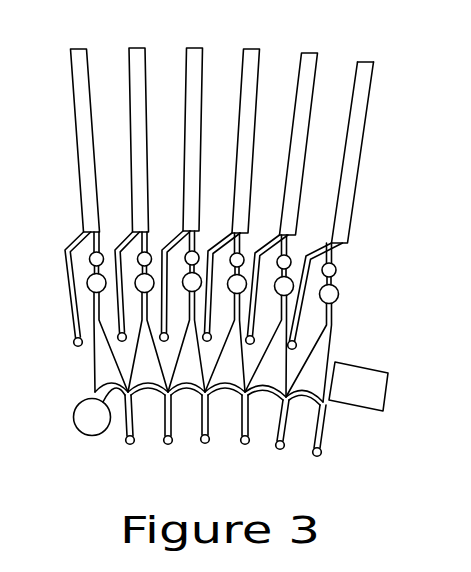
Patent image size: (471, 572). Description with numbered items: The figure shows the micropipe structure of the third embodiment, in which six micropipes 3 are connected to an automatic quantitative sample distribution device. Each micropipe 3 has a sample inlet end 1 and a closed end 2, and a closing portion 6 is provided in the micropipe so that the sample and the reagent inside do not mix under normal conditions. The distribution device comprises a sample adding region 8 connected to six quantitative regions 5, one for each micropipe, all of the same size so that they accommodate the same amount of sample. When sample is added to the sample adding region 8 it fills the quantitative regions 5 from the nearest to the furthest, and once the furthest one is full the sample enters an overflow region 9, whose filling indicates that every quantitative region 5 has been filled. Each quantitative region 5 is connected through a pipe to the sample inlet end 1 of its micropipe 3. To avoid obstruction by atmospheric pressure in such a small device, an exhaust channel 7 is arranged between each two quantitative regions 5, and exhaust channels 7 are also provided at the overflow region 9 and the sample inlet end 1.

The sample inlet end 1 is at (338, 248).
The closed end 2 is at (370, 60).
The micropipe 3 is at (363, 149).
The quantitative region 5 is at (317, 368).
The closing portion 6 is at (340, 299).
The exhaust channel 7 is at (69, 316).
The sample adding region 8 is at (80, 439).
The overflow region 9 is at (384, 413).